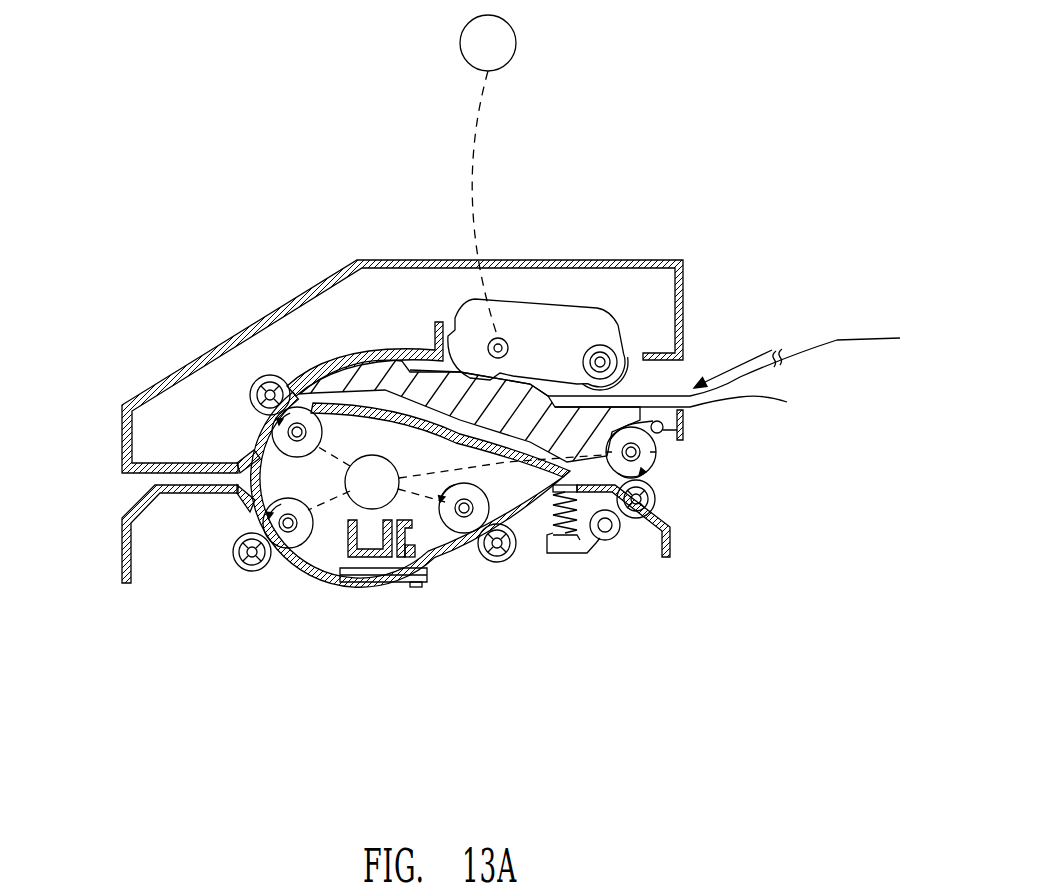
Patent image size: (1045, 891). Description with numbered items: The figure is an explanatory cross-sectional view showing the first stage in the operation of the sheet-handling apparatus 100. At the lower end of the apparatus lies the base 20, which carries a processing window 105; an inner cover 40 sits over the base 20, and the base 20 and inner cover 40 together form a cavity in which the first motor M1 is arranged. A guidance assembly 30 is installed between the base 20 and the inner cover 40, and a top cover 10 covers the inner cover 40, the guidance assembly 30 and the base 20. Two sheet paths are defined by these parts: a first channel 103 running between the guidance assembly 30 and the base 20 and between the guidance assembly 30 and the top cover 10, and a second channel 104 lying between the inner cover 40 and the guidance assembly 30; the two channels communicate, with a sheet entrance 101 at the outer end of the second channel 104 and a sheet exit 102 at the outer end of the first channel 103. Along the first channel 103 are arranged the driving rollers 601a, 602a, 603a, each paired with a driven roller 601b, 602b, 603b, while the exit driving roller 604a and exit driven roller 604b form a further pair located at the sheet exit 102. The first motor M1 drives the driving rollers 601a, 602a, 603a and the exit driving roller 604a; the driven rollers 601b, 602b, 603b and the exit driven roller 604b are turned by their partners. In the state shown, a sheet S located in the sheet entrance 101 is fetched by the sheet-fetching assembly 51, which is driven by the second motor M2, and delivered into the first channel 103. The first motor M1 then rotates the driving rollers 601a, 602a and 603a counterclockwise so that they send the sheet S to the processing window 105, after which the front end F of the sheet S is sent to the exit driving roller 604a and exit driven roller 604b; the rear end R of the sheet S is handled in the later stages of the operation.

The sheet-handling apparatus 100 is at (207, 145).
The top cover 10 is at (643, 262).
The base 20 is at (120, 550).
The guidance assembly 30 is at (336, 395).
The inner cover 40 is at (620, 395).
The sheet-fetching assembly 51 is at (562, 306).
The sheet entrance 101 is at (640, 387).
The sheet exit 102 is at (672, 512).
The first channel 103 is at (247, 447).
The second channel 104 is at (407, 405).
The processing window 105 is at (385, 583).
The driving roller 601a is at (298, 428).
The driven roller 601b is at (255, 385).
The driving roller 602a is at (291, 548).
The driven roller 602b is at (242, 564).
The driving roller 603a is at (467, 533).
The driven roller 603b is at (510, 548).
The exit driving roller 604a is at (656, 452).
The exit driven roller 604b is at (637, 519).
The first motor M1 is at (455, 477).
The second motor M2 is at (488, 176).
The front end F is at (428, 303).
The sheet S is at (857, 328).
The rear end R is at (827, 340).